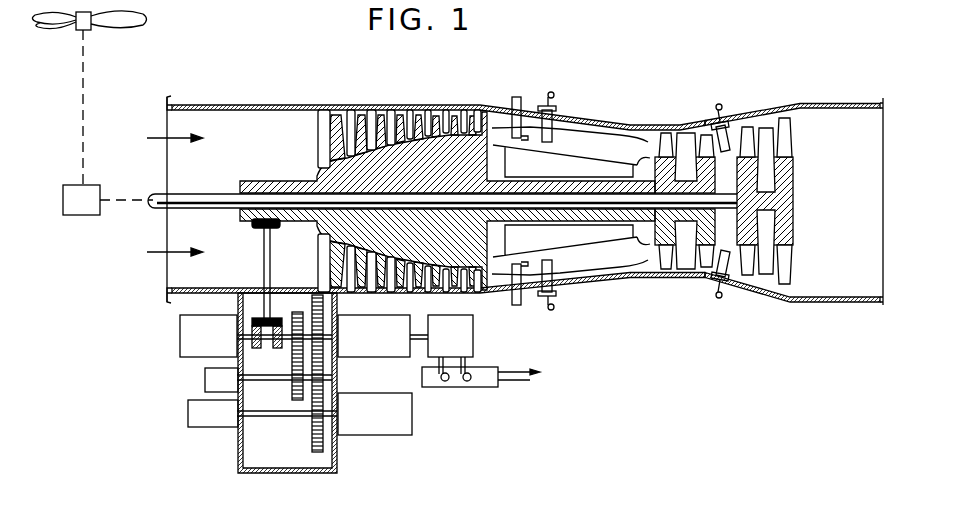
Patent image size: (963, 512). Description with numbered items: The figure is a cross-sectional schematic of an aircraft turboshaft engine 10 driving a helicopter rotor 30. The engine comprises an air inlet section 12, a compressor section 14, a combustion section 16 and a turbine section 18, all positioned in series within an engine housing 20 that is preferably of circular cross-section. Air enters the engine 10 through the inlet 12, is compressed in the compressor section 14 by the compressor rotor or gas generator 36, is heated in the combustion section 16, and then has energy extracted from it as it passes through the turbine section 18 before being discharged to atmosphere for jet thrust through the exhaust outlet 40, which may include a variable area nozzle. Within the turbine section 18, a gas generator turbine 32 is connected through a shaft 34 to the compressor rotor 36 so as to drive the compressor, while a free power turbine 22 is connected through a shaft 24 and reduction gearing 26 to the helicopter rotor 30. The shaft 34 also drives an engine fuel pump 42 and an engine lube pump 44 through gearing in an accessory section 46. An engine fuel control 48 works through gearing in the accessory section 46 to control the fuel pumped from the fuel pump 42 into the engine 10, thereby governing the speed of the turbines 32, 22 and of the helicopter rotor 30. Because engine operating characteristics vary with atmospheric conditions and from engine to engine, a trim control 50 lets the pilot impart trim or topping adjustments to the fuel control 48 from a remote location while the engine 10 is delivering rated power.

The aircraft turboshaft engine 10 is at (592, 296).
The air inlet section 12 is at (227, 104).
The compressor section 14 is at (399, 104).
The combustion section 16 is at (588, 111).
The turbine section 18 is at (691, 122).
The engine housing 20 is at (291, 106).
The free power turbine 22 is at (737, 258).
The shaft 24 is at (648, 205).
The reduction gearing 26 is at (88, 205).
The helicopter rotor 30 is at (92, 30).
The gas generator turbine 32 is at (707, 270).
The shaft 34 is at (636, 227).
The compressor rotor 36 is at (463, 283).
The exhaust outlet 40 is at (814, 304).
The engine fuel pump 42 is at (376, 346).
The engine lube pump 44 is at (383, 428).
The accessory section 46 is at (311, 475).
The engine fuel control 48 is at (473, 340).
The trim control 50 is at (466, 389).